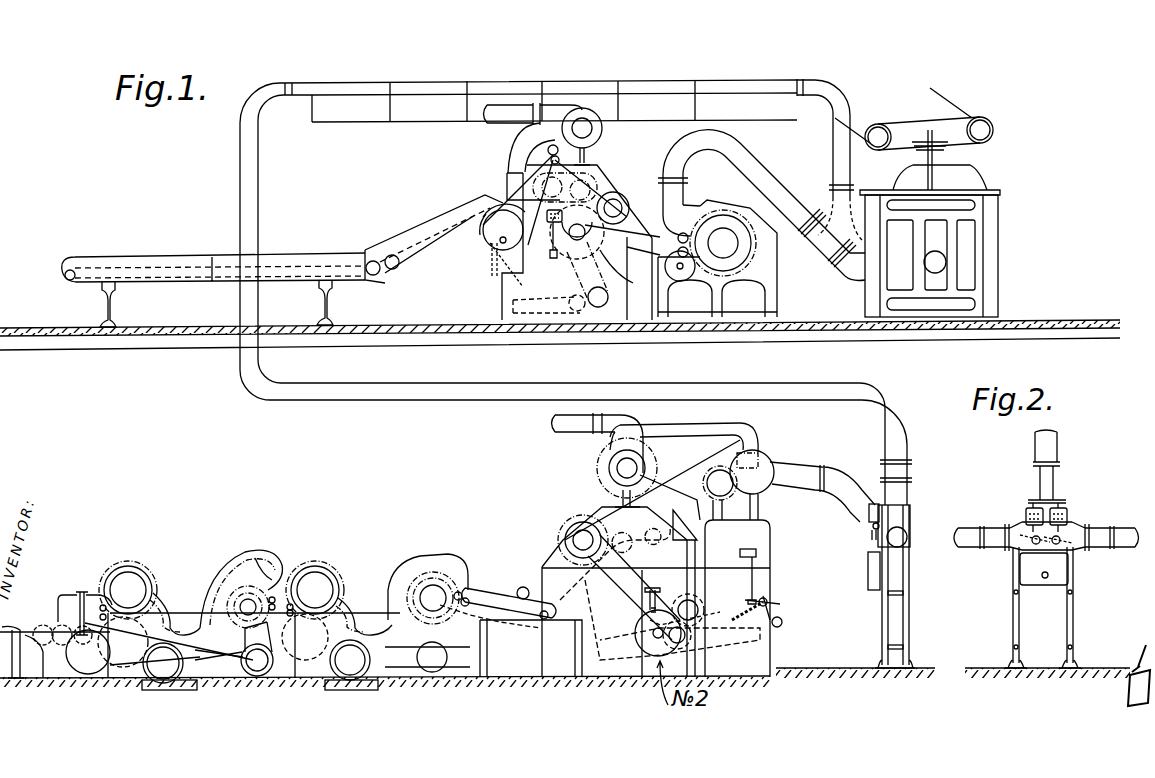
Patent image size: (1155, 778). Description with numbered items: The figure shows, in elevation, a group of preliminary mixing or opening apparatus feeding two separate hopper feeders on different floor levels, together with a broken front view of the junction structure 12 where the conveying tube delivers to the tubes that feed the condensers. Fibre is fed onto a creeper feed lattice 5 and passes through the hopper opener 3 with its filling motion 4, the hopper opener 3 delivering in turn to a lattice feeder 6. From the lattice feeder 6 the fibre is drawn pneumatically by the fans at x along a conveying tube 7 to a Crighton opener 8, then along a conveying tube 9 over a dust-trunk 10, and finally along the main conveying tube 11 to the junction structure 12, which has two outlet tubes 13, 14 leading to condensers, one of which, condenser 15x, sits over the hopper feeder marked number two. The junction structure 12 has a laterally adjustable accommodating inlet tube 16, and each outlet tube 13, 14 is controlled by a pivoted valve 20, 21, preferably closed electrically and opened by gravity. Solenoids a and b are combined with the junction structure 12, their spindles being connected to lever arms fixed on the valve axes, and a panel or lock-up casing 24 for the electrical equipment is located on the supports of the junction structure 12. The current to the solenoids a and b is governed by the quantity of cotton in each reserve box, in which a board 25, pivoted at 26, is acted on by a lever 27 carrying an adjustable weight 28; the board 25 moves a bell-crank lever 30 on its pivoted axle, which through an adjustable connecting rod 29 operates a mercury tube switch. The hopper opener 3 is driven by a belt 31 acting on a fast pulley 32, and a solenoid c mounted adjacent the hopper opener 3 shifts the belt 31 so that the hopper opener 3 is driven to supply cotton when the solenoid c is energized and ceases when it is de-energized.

In FIG. 1, the hopper opener 3 is at (570, 236).
In FIG. 1, the filling motion 4 is at (440, 241).
In FIG. 1, the creeper feed lattice 5 is at (301, 259).
In FIG. 1, the lattice feeder 6 is at (663, 212).
In FIG. 1, the conveying tube 7 is at (779, 185).
In FIG. 1, the Crighton opener 8 is at (996, 231).
In FIG. 1, the conveying tube 9 is at (826, 96).
In FIG. 1, the dust-trunk 10 is at (663, 81).
In FIG. 1, the main conveying tube 11 is at (244, 153).
In FIG. 2, the main conveying tube 11 is at (1052, 445).
In FIG. 1, the junction structure 12 is at (897, 517).
In FIG. 2, the junction structure 12 is at (1084, 510).
In FIG. 2, the outlet tube 13 is at (971, 566).
In FIG. 2, the outlet tube 14 is at (1131, 566).
In FIG. 1, the condenser 15x is at (772, 448).
In FIG. 2, the inlet tube 16 is at (1024, 490).
In FIG. 2, the valve 20 is at (1021, 551).
In FIG. 2, the valve 21 is at (1076, 552).
In FIG. 1, the panel or lock-up casing 24 is at (866, 582).
In FIG. 2, the panel or lock-up casing 24 is at (1040, 588).
In FIG. 1, the board 25 is at (734, 608).
In FIG. 1, the pivot 26 is at (774, 602).
In FIG. 1, the lever 27 is at (775, 610).
In FIG. 1, the adjustable weight 28 is at (781, 626).
In FIG. 1, the adjustable connecting rod 29 is at (774, 575).
In FIG. 1, the bell-crank lever 30 is at (754, 594).
In FIG. 1, the belt 31 is at (613, 263).
In FIG. 1, the fast pulley 32 is at (571, 256).
In FIG. 1, the solenoid a is at (866, 512).
In FIG. 2, the solenoid a is at (1016, 519).
In FIG. 1, the solenoid b is at (867, 528).
In FIG. 2, the solenoid b is at (1079, 521).
In FIG. 1, the solenoid c is at (564, 234).
In FIG. 1, the fans x is at (599, 471).